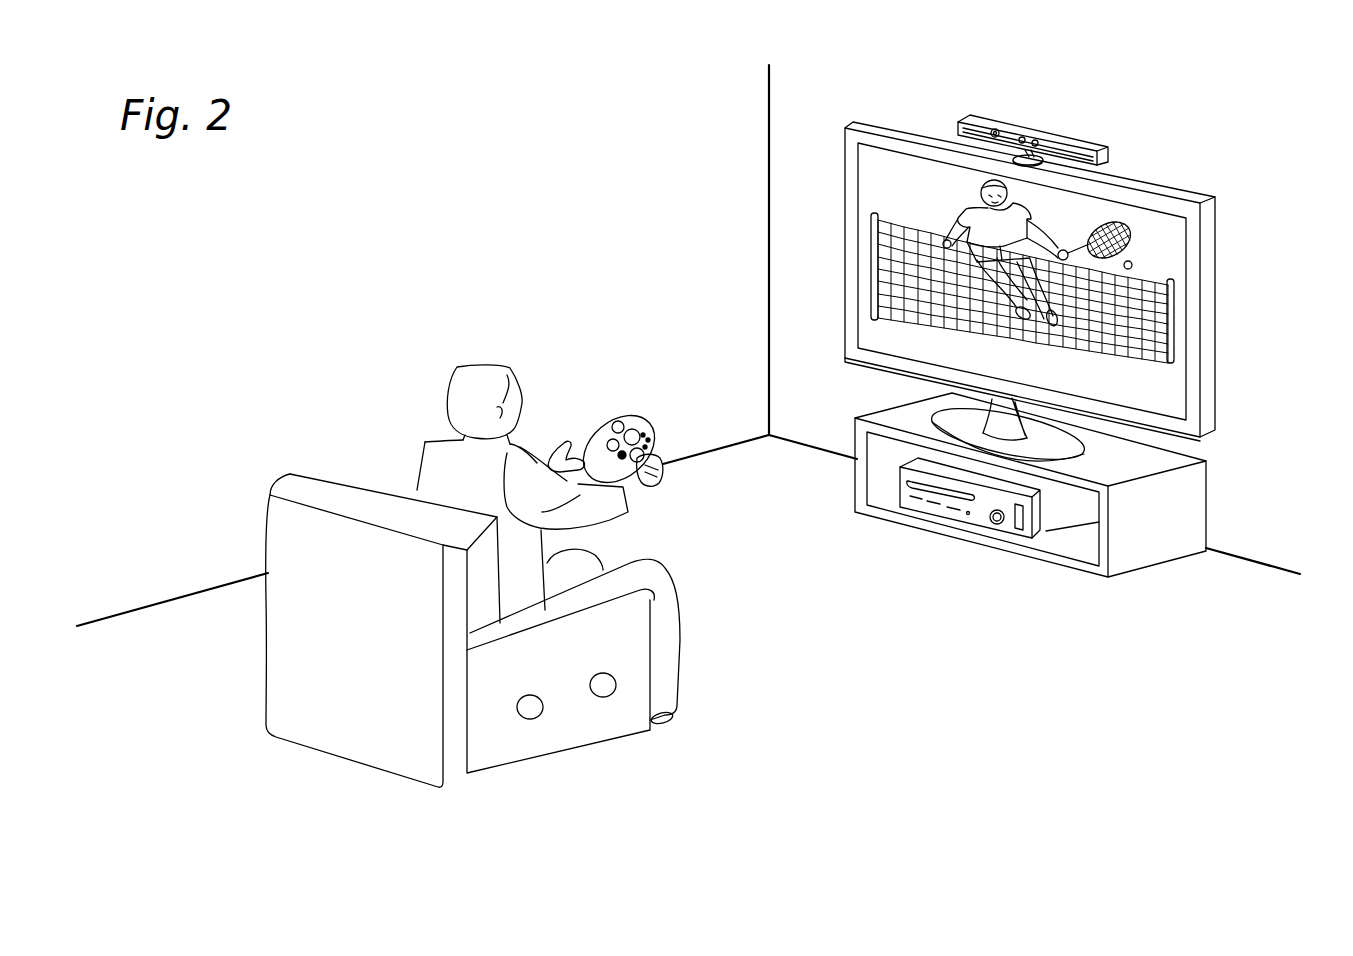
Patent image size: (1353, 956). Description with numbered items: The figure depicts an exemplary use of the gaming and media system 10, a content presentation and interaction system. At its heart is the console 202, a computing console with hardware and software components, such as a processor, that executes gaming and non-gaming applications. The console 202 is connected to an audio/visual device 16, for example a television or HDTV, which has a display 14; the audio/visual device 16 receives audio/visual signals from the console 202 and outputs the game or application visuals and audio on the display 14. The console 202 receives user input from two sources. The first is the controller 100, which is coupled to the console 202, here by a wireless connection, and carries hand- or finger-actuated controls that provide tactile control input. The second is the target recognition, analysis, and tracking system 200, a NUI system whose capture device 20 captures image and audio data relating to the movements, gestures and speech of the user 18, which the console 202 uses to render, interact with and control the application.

The gaming and media system 10 is at (816, 771).
The display 14 is at (1187, 362).
The audio/visual device 16 is at (1217, 255).
The user 18 is at (466, 364).
The capture device 20 is at (1037, 131).
The controller 100 is at (612, 430).
The target recognition, analysis, and tracking system 200 is at (1240, 95).
The console 202 is at (977, 517).